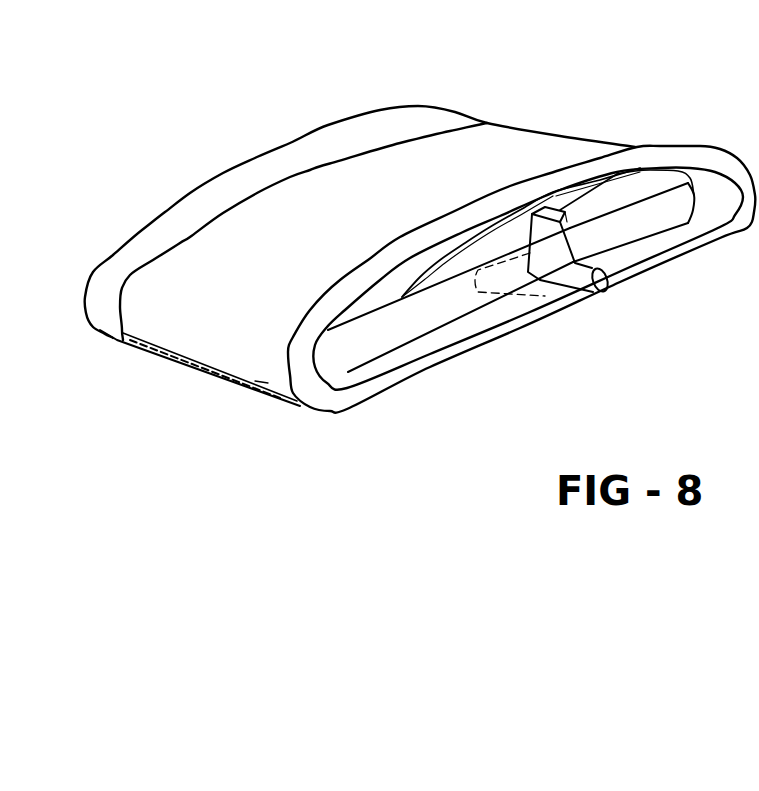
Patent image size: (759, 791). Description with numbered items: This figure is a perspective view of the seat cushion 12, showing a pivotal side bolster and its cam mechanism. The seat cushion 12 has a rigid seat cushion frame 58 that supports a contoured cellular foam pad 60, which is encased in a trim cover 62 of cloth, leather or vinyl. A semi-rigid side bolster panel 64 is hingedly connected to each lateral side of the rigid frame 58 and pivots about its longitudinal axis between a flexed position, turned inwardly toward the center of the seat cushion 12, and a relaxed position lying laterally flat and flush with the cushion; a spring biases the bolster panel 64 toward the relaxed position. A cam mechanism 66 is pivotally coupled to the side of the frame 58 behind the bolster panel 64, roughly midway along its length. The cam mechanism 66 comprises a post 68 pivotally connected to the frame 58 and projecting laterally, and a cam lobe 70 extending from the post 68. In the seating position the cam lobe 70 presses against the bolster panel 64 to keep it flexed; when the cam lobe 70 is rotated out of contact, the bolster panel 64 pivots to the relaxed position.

The seat cushion 12 is at (559, 145).
The rigid seat cushion frame 58 is at (388, 342).
The contoured cellular foam pad 60 is at (280, 355).
The trim cover 62 is at (298, 407).
The side bolster panel 64 is at (470, 253).
The cam mechanism 66 is at (601, 296).
The post 68 is at (608, 282).
The cam lobe 70 is at (578, 244).